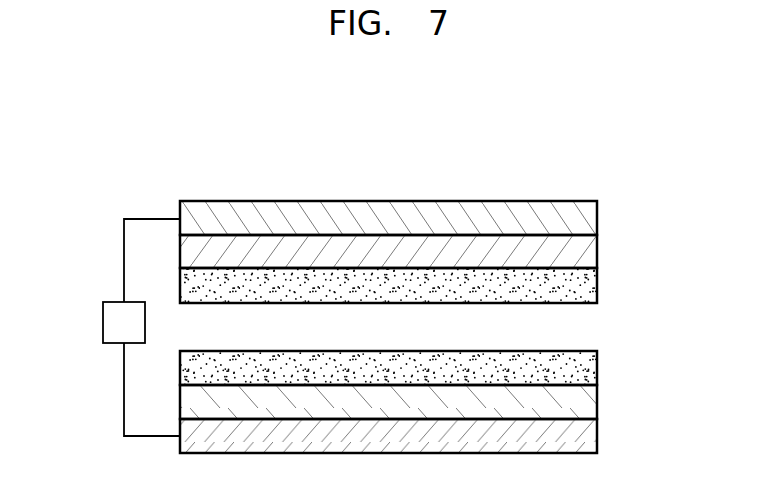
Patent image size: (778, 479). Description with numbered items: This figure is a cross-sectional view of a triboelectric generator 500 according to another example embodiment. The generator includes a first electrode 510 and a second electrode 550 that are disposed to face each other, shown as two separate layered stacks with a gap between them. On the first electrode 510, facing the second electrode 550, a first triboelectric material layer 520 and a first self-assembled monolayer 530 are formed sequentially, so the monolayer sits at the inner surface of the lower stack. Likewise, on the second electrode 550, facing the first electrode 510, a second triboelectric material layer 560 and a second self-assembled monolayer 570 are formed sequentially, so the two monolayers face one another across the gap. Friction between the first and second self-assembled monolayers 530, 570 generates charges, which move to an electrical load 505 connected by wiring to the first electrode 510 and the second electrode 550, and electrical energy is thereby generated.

The display device 500 is at (605, 182).
The electrical load 505 is at (103, 323).
The first electrode 510 is at (597, 437).
The first triboelectric material layer 520 is at (597, 403).
The first self-assembled monolayer 530 is at (597, 370).
The second electrode 550 is at (597, 220).
The second triboelectric material layer 560 is at (597, 253).
The second self-assembled monolayer 570 is at (597, 287).